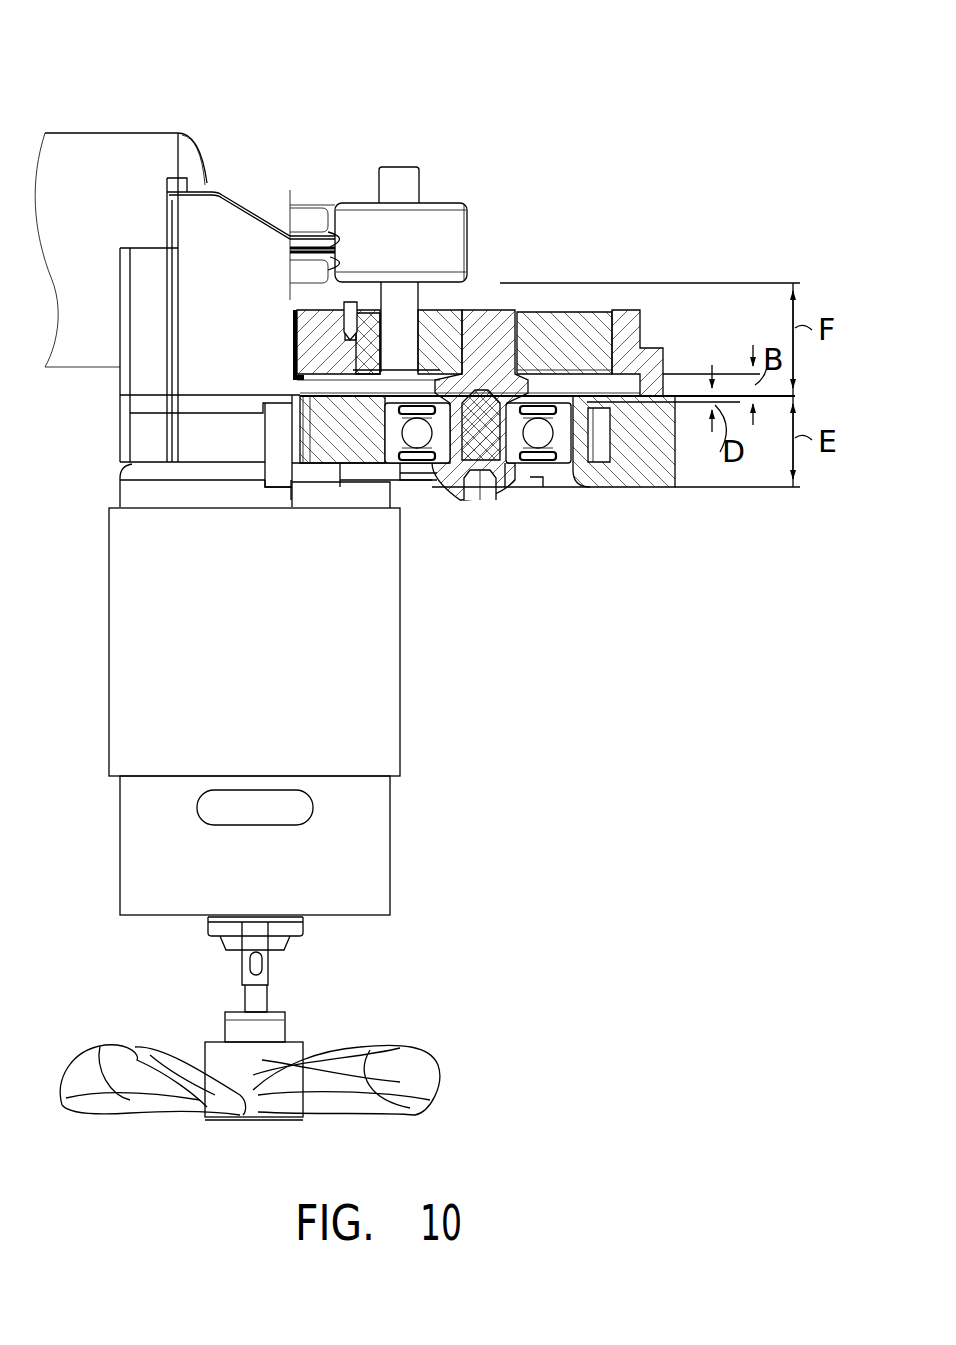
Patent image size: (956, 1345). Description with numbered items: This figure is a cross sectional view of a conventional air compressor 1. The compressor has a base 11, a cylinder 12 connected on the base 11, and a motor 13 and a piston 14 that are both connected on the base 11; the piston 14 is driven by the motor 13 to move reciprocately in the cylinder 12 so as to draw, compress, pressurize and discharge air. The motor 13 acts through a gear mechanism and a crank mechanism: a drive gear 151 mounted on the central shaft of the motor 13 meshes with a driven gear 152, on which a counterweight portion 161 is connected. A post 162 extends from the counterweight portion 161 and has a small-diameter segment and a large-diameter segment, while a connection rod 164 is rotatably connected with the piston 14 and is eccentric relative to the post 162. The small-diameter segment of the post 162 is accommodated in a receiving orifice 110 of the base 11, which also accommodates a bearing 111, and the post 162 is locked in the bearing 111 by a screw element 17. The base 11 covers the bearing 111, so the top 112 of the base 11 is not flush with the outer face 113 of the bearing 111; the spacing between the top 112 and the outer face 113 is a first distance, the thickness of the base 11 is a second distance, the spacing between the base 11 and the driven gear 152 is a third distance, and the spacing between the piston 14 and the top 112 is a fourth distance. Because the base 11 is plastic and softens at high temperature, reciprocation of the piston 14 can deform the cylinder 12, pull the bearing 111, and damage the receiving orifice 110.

The air compressor 1 is at (603, 857).
The base 11 is at (672, 490).
The cylinder 12 is at (80, 158).
The motor 13 is at (375, 830).
The piston 14 is at (442, 227).
The screw element 17 is at (500, 490).
The receiving orifice 110 is at (552, 472).
The bearing 111 is at (392, 454).
The top of the base 112 is at (663, 394).
The outer face of the bearing 113 is at (545, 378).
The drive gear 151 is at (293, 345).
The driven gear 152 is at (625, 308).
The counterweight portion 161 is at (585, 330).
The post 162 is at (494, 340).
The connection rod 164 is at (398, 167).